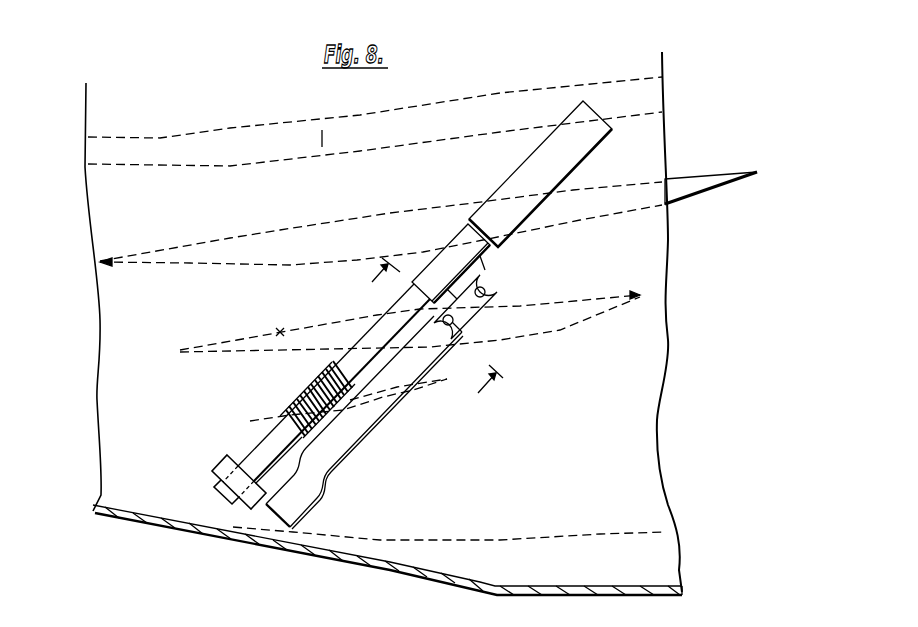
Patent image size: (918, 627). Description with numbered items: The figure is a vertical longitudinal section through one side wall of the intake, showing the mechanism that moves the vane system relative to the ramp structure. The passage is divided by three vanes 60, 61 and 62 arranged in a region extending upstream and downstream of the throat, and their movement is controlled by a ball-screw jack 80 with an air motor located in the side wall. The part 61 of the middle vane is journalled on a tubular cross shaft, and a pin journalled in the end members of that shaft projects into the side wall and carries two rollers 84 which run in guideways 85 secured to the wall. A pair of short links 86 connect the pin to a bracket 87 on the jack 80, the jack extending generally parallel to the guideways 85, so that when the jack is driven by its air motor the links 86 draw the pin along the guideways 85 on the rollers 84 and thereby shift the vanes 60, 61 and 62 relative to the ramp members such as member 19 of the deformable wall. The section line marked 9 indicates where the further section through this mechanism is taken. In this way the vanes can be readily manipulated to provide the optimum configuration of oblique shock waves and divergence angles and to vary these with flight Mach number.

The guide lines 19 is at (358, 113).
The vane 60 is at (290, 240).
The section line 9- 9 is at (428, 334).
The middle vane part 61 is at (280, 332).
The ball-screw jack 80 is at (368, 342).
The vane 62 is at (280, 413).
The bracket 87 is at (478, 265).
The short link 86 is at (502, 313).
The roller 84 is at (440, 336).
The guideway 85 is at (352, 432).